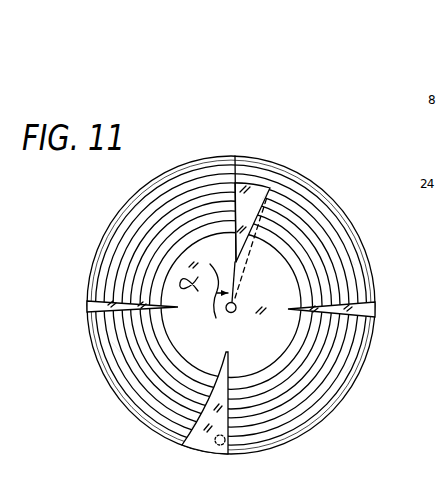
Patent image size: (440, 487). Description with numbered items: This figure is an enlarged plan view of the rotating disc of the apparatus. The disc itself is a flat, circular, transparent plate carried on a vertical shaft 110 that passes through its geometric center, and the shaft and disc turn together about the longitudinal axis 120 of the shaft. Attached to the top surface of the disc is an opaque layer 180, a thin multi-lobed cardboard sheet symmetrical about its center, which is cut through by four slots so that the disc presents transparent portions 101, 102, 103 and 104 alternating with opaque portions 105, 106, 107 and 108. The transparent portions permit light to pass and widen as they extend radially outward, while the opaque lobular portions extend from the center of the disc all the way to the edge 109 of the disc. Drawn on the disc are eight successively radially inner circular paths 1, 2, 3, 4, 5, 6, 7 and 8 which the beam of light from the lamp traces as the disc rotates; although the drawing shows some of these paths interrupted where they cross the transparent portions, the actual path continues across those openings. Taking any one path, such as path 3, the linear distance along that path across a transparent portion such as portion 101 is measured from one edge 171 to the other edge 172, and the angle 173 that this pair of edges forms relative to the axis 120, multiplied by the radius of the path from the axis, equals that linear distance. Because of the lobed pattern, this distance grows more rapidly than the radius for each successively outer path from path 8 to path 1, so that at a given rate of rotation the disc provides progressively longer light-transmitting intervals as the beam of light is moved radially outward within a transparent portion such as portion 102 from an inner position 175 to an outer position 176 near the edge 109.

The circular path 1 is at (148, 416).
The circular path 2 is at (132, 393).
The circular path 3 is at (133, 378).
The circular path 4 is at (132, 365).
The circular path 5 is at (130, 349).
The circular path 6 is at (205, 388).
The circular path 7 is at (197, 386).
The circular path 8 is at (190, 385).
The transparent portion 101 is at (266, 166).
The transparent portion 102 is at (210, 438).
The transparent portion 103 is at (375, 310).
The transparent portion 104 is at (87, 306).
The opaque portion 105 is at (347, 256).
The opaque portion 106 is at (352, 363).
The opaque portion 107 is at (112, 342).
The opaque portion 108 is at (110, 237).
The edge of the disc 109 is at (128, 212).
The vertical shaft 110 is at (229, 313).
The longitudinal axis 120 is at (237, 314).
The edge of path over transparent portion 171 is at (235, 157).
The edge of path over transparent portion 172 is at (270, 188).
The angle alpha 173 is at (189, 286).
The inner position of light beam 175 is at (229, 358).
The outer position of light beam 176 is at (221, 446).
The opaque layer 180 is at (276, 276).